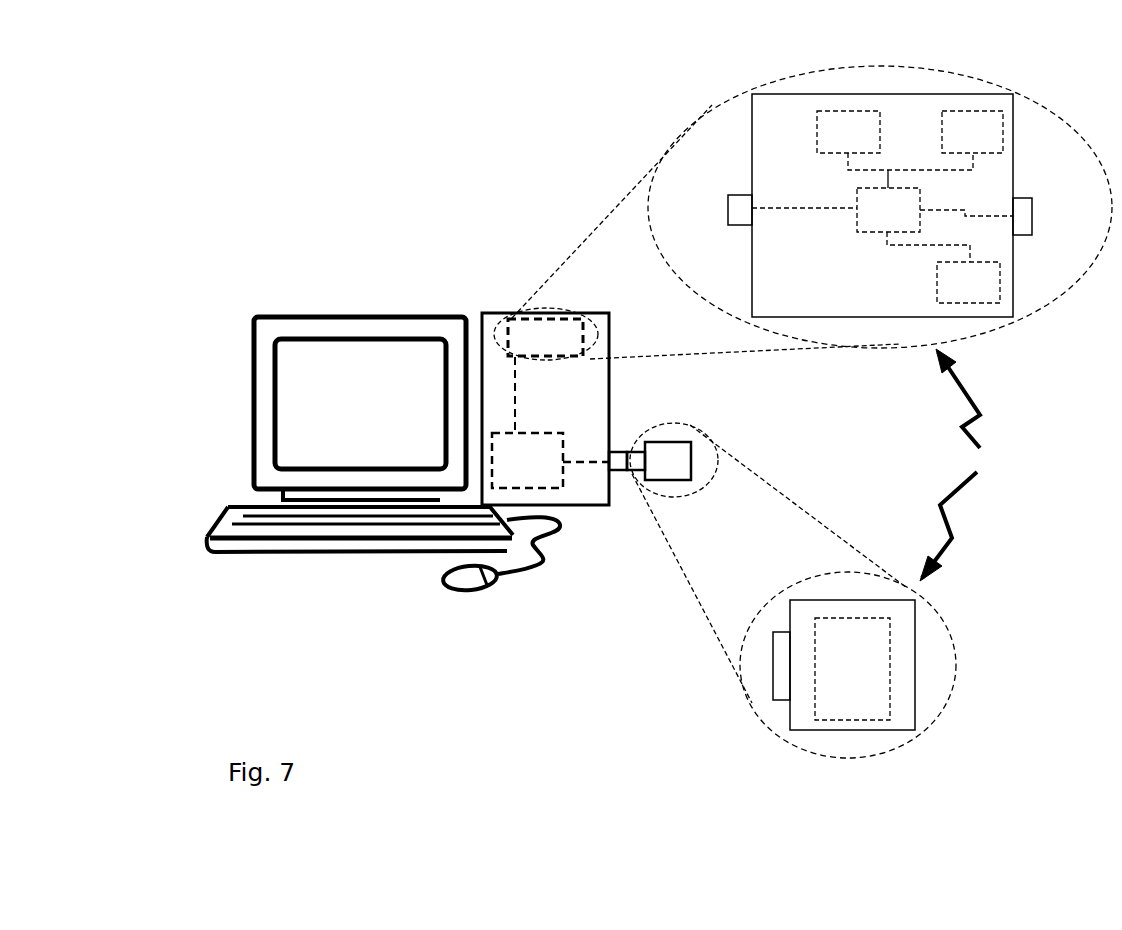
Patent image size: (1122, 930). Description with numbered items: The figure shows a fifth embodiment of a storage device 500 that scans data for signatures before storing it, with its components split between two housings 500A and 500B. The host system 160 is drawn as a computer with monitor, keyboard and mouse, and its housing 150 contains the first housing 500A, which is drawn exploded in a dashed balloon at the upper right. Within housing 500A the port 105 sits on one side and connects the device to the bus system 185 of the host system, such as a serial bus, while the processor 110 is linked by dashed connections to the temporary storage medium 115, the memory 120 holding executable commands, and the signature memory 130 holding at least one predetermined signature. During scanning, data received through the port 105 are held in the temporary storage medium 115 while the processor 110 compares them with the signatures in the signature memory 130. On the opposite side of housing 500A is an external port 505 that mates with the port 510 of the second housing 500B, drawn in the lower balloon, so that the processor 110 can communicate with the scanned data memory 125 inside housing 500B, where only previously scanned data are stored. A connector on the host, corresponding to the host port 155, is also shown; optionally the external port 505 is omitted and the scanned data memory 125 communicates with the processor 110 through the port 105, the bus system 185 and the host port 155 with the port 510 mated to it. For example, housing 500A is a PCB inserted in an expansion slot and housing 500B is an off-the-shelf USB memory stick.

The port 105 is at (714, 212).
The processor 110 is at (888, 210).
The temporary storage medium 115 is at (848, 132).
The memory 120 is at (972, 132).
The scanned data memory 125 is at (860, 643).
The signature memory 130 is at (968, 282).
The host system 150 is at (595, 393).
The port of the host system 155 is at (618, 472).
The processor of the host system 160 is at (567, 490).
The bus system 185 is at (537, 342).
The storage device 500 is at (972, 465).
The housing 500A is at (880, 241).
The housing 500B is at (814, 648).
The external port 505 is at (1047, 216).
The port of the housing 500B 510 is at (778, 672).